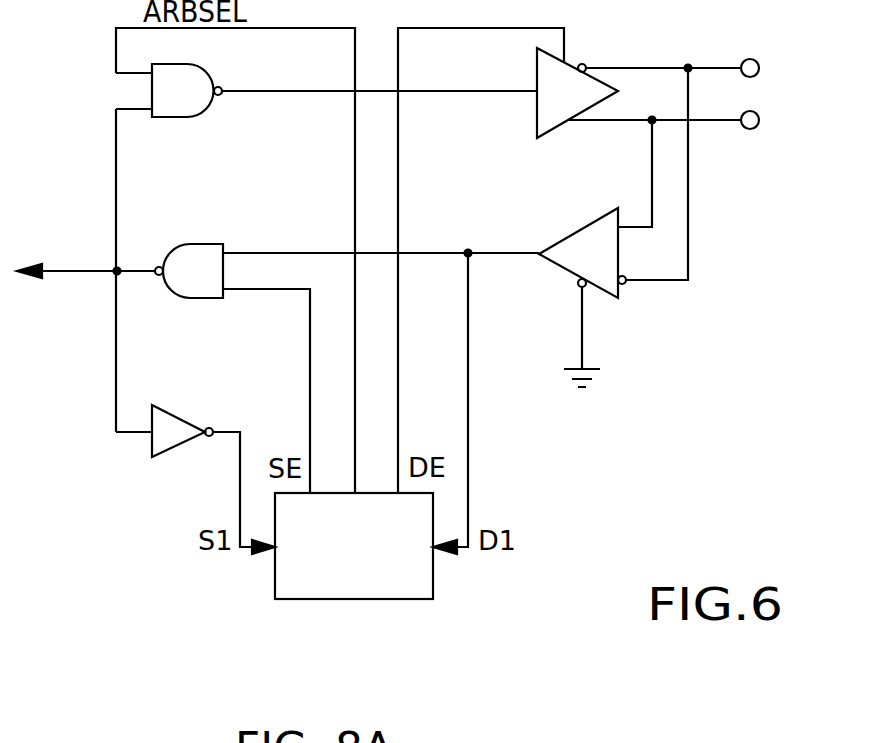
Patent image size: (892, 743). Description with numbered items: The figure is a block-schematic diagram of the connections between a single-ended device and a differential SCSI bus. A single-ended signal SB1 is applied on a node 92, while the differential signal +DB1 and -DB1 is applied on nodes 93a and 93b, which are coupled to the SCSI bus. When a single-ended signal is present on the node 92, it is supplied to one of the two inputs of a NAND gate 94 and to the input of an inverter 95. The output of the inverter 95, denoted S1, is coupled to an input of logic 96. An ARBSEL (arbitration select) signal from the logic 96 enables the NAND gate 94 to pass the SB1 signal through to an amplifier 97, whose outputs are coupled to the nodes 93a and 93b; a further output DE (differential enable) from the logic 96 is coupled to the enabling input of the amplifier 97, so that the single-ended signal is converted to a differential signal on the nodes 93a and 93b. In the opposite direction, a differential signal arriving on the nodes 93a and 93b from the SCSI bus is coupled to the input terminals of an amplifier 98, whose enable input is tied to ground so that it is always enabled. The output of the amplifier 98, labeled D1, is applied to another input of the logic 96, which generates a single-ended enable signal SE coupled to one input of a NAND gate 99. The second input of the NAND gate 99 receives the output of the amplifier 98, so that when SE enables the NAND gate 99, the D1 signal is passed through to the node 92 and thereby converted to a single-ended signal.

The node 92 is at (115, 273).
The node 93a is at (743, 62).
The node 93b is at (743, 130).
The NAND gate 94 is at (185, 116).
The inverter 95 is at (172, 447).
The logic 96 is at (382, 600).
The amplifier 97 is at (537, 117).
The amplifier 98 is at (577, 240).
The NAND gate 99 is at (188, 295).